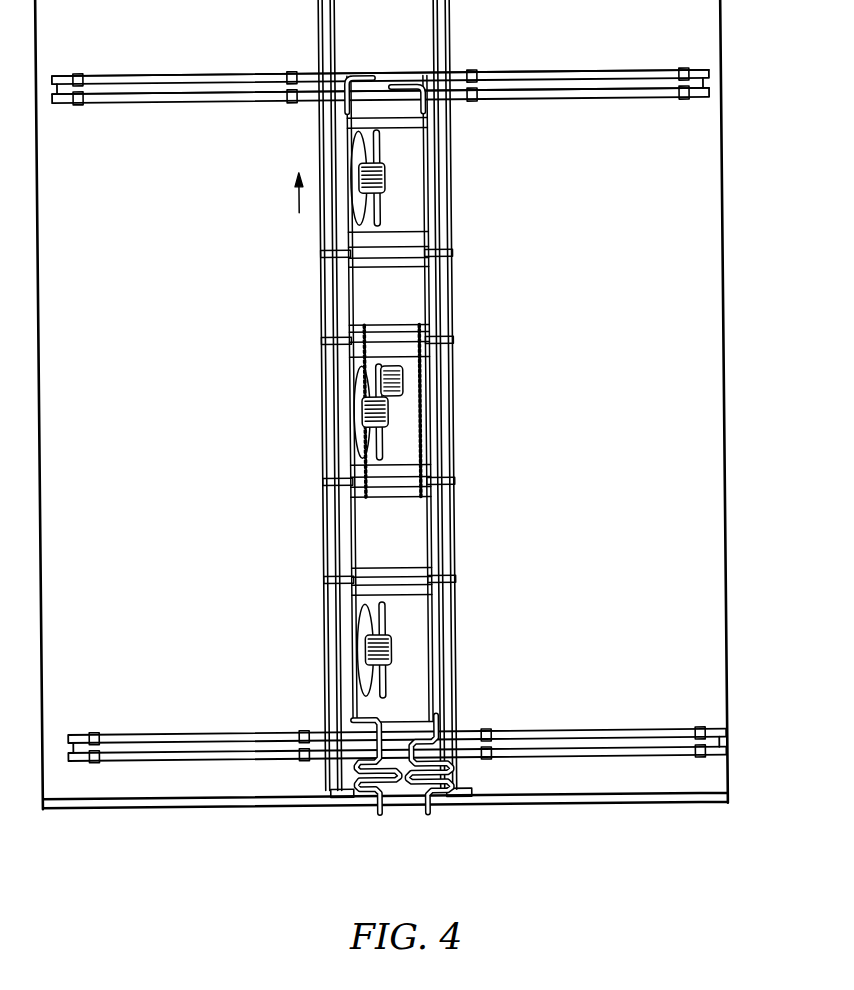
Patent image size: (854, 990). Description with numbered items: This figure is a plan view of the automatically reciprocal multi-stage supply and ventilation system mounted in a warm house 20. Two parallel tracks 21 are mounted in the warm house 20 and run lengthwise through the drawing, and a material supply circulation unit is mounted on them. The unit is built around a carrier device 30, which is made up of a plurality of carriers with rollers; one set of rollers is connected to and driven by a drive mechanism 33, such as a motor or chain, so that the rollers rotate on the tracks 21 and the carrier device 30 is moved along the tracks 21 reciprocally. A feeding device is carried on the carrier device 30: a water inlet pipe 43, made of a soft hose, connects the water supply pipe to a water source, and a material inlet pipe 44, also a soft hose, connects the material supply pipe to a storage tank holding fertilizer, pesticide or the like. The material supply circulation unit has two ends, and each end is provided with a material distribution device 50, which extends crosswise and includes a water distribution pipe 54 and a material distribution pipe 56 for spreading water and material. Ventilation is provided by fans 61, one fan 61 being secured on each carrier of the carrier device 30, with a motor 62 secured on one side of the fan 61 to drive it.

The warm house 20 is at (729, 317).
The tracks 21 is at (455, 528).
The carrier device 30 is at (438, 316).
The drive mechanism 33 is at (430, 424).
The water inlet pipe 43 is at (366, 790).
The material inlet pipe 44 is at (431, 792).
The material distribution device 50 is at (604, 106).
The water distribution pipe 54 is at (622, 73).
The material distribution pipe 56 is at (555, 101).
The fan 61 is at (374, 146).
The motor 62 is at (387, 366).